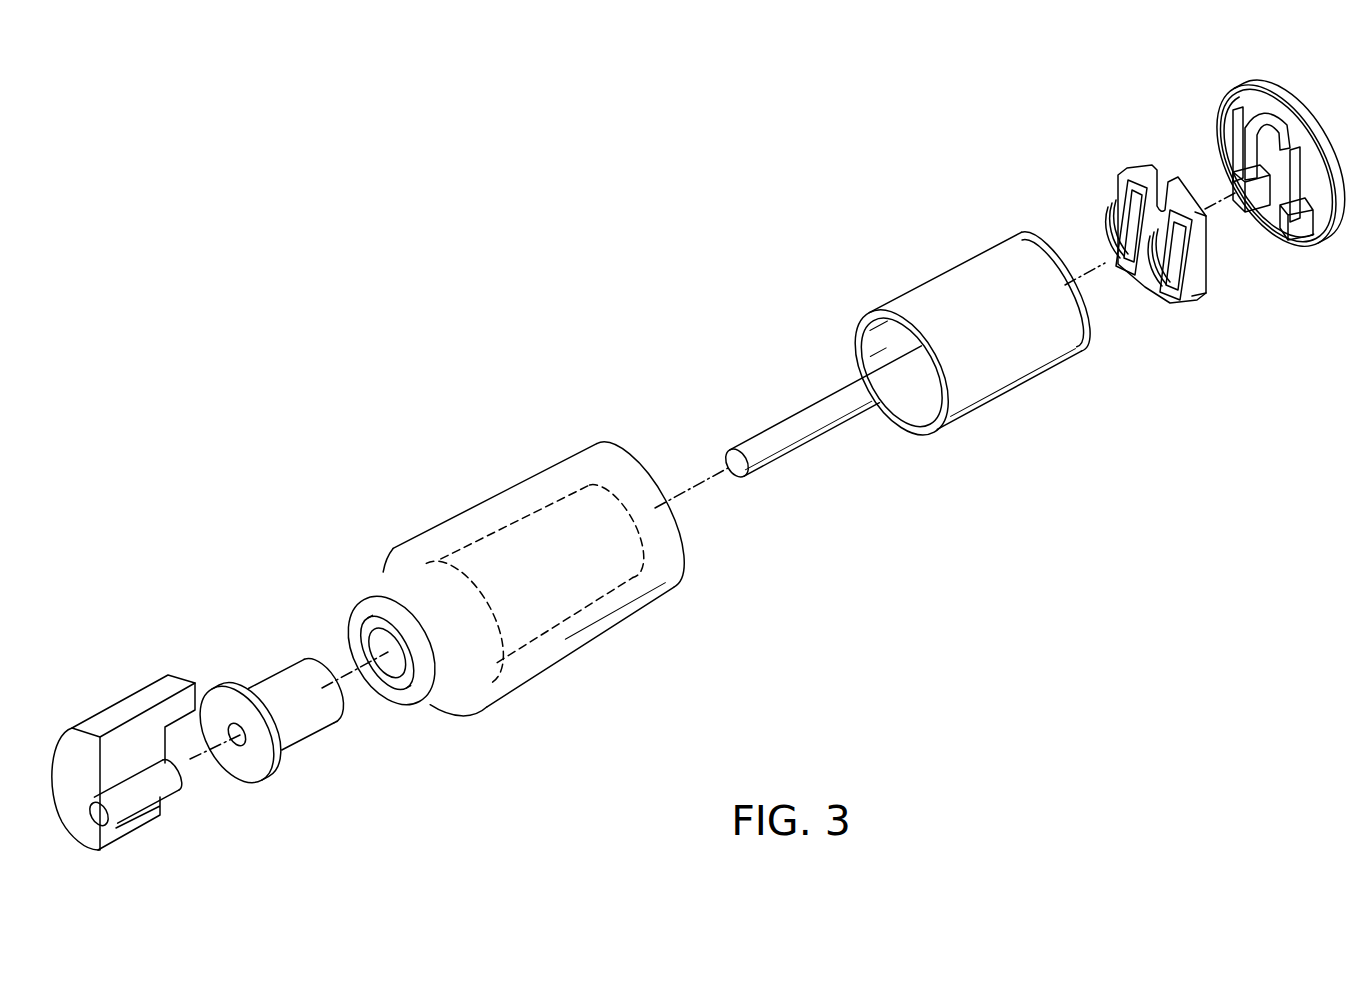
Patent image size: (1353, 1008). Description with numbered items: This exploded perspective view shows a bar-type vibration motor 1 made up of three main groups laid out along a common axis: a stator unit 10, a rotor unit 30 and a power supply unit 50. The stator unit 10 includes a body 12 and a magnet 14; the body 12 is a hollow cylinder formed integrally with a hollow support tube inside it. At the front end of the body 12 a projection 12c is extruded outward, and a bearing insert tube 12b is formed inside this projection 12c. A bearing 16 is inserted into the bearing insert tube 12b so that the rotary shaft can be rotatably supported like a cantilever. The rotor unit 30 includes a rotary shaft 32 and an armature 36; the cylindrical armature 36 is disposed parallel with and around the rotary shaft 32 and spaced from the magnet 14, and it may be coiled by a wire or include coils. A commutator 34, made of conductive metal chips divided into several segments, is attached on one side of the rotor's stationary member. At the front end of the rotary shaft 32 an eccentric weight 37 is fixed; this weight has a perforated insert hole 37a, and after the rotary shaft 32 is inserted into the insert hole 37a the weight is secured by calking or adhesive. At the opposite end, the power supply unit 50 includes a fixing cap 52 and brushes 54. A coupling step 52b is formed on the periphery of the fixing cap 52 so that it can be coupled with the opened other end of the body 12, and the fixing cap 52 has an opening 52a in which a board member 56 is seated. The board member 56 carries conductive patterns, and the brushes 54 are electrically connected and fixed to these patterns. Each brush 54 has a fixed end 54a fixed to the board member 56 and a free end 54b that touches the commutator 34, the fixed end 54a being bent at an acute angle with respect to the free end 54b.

The bar-type vibration motor 1 is at (585, 335).
The stator unit 10 is at (428, 492).
The body 12 is at (597, 632).
The bearing insert tube 12b is at (400, 685).
The projection 12c is at (362, 620).
The magnet 14 is at (532, 525).
The bearing 16 is at (248, 765).
The rotor unit 30 is at (920, 282).
The rotary shaft 32 is at (778, 448).
The commutator 34 is at (1097, 315).
The armature 36 is at (966, 414).
The eccentric weight 37 is at (135, 704).
The insert hole 37a is at (102, 822).
The power supply unit 50 is at (1093, 170).
The fixing cap 52 is at (1223, 113).
The opening 52a is at (1240, 163).
The coupling step 52b is at (1300, 123).
The brushes 54 is at (1107, 220).
The fixed end 54a is at (1178, 235).
The free end 54b is at (1205, 293).
The board member 56 is at (1138, 168).